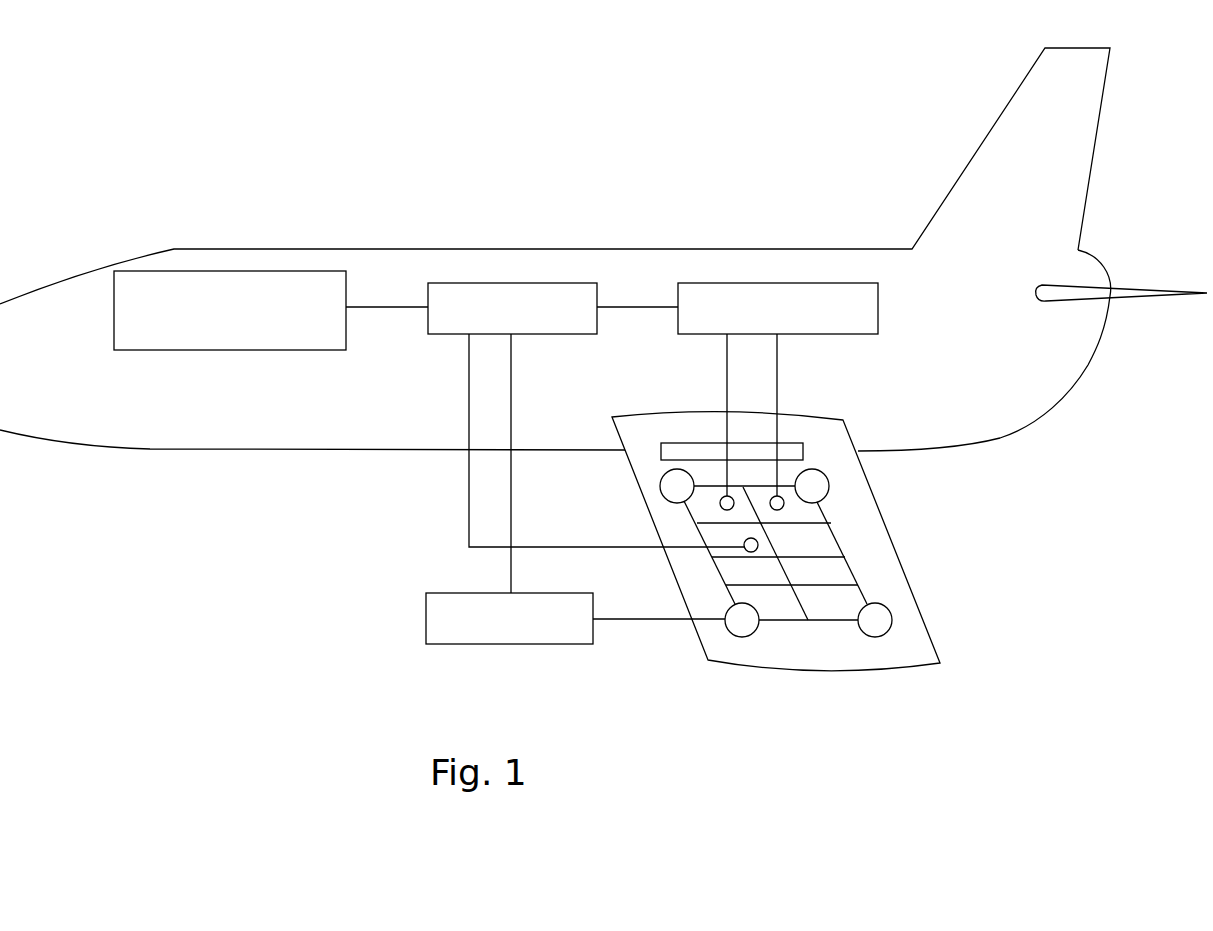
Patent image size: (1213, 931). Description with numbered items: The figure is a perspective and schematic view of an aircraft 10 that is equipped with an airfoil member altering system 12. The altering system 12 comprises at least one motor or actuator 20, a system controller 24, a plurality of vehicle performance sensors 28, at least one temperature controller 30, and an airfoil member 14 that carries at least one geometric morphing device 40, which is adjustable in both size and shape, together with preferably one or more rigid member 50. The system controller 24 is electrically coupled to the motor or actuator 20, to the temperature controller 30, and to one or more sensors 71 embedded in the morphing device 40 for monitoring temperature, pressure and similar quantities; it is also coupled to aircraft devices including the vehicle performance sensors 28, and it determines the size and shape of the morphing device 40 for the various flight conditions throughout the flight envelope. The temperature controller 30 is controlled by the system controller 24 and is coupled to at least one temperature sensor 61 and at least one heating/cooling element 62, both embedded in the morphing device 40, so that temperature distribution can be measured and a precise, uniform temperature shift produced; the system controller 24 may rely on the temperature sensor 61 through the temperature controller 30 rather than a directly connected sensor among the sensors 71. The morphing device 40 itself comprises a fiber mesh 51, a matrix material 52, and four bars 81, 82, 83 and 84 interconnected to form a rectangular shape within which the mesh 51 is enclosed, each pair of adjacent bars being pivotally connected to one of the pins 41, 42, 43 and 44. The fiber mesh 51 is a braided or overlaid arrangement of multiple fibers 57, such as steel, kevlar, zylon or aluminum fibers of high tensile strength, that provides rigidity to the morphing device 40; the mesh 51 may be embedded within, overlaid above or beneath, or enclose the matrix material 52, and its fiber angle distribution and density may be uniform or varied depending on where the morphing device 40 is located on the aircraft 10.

The aircraft 10 is at (588, 249).
The airfoil member altering system 12 is at (460, 477).
The airfoil member 14 is at (900, 595).
The motor or actuator 20 is at (441, 585).
The system controller 24 is at (461, 283).
The vehicle performance sensors 28 is at (243, 271).
The temperature controller 30 is at (761, 283).
The geometric morphing device 40 is at (775, 603).
The pin 41 is at (742, 637).
The pin 42 is at (880, 619).
The pin 43 is at (672, 487).
The pin 44 is at (806, 485).
The rigid member 50 is at (793, 443).
The fiber mesh 51 is at (783, 553).
The matrix material 52 is at (828, 570).
The fibers 57 is at (745, 585).
The temperature sensor 61 is at (784, 505).
The heating/cooling element 62 is at (727, 507).
The sensors 71 is at (745, 550).
The bar 81 is at (835, 622).
The bar 82 is at (833, 540).
The bar 83 is at (713, 487).
The bar 84 is at (717, 528).